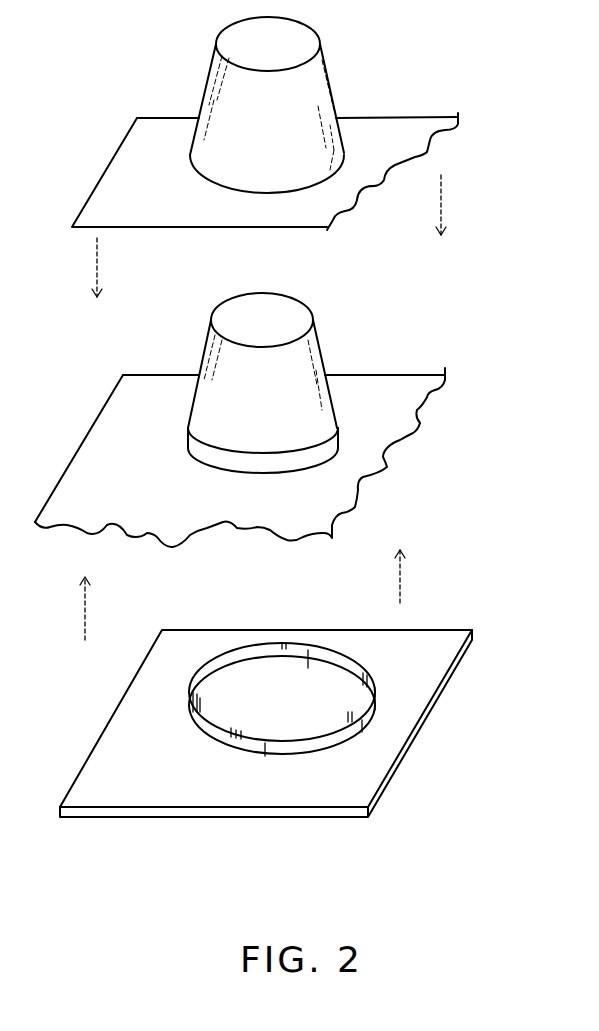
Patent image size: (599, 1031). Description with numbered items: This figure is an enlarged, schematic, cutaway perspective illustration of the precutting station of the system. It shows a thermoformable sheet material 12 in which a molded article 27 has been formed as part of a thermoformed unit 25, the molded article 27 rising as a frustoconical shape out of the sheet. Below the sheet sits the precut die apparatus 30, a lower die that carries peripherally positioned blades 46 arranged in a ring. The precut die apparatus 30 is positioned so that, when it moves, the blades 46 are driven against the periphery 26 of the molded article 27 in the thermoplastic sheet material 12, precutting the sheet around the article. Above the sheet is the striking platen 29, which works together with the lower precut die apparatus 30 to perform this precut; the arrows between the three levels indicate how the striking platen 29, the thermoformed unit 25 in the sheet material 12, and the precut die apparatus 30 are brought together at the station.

The striking platen 29 is at (114, 157).
The thermoformed unit 25 is at (92, 403).
The molded article 27 is at (308, 338).
The periphery 26 is at (327, 452).
The thermoformable sheet material 12 is at (402, 412).
The peripherally positioned blades 46 is at (197, 677).
The precut die apparatus 30 is at (455, 692).